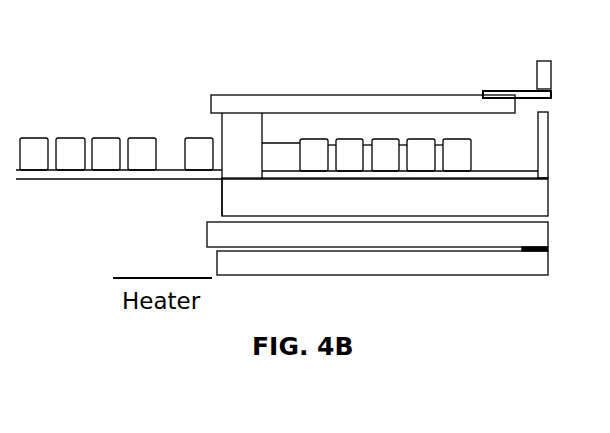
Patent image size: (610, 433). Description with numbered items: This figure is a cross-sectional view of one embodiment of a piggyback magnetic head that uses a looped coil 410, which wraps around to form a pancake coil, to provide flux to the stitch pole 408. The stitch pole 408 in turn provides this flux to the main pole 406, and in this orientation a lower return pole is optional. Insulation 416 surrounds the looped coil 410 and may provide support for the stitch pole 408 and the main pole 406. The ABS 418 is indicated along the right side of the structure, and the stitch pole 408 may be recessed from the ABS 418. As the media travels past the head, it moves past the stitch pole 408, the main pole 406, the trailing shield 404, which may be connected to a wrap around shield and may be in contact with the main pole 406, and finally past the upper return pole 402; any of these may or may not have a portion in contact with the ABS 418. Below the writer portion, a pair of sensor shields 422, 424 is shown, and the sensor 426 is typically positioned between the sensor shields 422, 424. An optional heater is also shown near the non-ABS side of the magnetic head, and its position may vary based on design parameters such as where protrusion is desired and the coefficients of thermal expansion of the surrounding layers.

The upper return pole 402 is at (552, 72).
The trailing shield 404 is at (549, 152).
The main pole 406 is at (520, 92).
The stitch pole 408 is at (388, 95).
The looped coil 410 is at (456, 139).
The insulation 416 is at (433, 206).
The ABS 418 is at (553, 197).
The sensor shield 422 is at (207, 238).
The sensor shield 424 is at (217, 257).
The sensor 426 is at (544, 242).